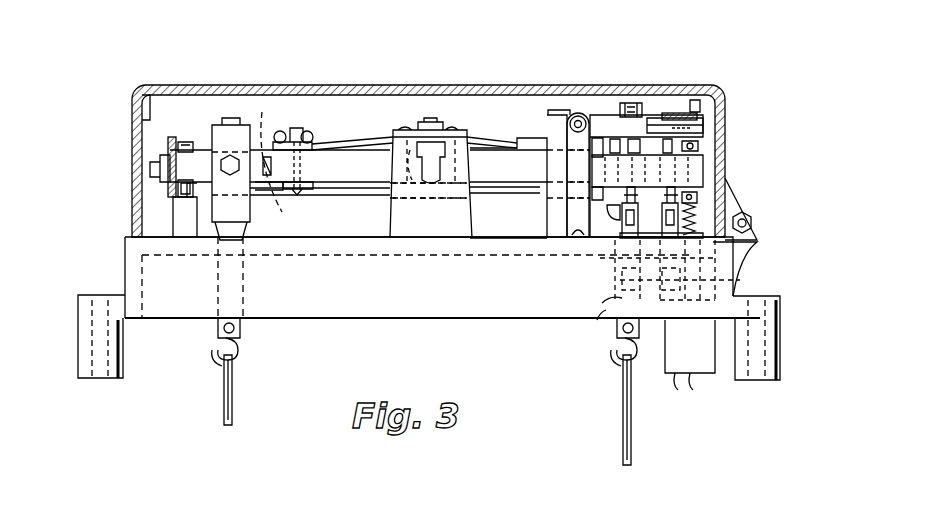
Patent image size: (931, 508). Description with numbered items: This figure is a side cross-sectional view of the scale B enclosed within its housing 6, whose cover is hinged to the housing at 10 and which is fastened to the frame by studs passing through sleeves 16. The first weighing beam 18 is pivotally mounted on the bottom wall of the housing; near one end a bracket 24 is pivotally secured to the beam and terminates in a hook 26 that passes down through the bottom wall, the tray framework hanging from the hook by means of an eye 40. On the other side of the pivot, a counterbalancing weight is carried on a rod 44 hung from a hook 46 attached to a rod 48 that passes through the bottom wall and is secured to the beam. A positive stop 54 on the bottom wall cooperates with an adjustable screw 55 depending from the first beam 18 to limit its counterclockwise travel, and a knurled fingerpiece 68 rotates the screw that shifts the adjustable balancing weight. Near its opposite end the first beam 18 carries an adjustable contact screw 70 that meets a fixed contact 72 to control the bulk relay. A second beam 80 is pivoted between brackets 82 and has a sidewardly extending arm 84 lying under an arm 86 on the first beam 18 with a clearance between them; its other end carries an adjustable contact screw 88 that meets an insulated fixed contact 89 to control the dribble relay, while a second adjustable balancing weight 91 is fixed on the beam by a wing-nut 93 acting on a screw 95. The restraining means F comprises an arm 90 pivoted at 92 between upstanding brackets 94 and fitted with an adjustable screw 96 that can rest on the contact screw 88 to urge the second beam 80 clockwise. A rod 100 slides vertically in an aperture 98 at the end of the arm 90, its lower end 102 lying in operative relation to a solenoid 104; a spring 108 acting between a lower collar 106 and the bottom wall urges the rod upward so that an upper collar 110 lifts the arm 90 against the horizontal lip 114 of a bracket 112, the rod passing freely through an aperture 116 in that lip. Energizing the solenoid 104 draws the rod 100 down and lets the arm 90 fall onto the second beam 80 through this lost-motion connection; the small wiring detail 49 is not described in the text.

The scale B is at (150, 88).
The restraining means F is at (650, 96).
The housing 6 is at (137, 263).
The hinge 10 is at (755, 223).
The sleeves 16 is at (80, 360).
The first weighing beam 18 is at (200, 158).
The bracket 24 is at (240, 125).
The hook 26 is at (247, 360).
The eye 40 is at (233, 395).
The rod 44 is at (632, 437).
The hook 46 is at (617, 358).
The rod 48 is at (600, 312).
The wiring 49 is at (630, 302).
The positive stop 54 is at (178, 215).
The adjustable screw 55 is at (186, 142).
The knurled fingerpiece 68 is at (172, 150).
The adjustable contact screw 70 is at (672, 197).
The fixed contact 72 is at (661, 229).
The second beam 80 is at (495, 168).
The brackets 82 is at (460, 212).
The sidewardly extending arm 84 is at (272, 191).
The sidewardly extending arm 86 is at (267, 155).
The adjustable contact screw 88 is at (632, 197).
The fixed contact 89 is at (630, 205).
The arm 90 is at (600, 118).
The second adjustable balancing weight 91 is at (318, 142).
The pivot 92 is at (578, 114).
The wing-nut 93 is at (304, 128).
The upstanding brackets 94 is at (575, 223).
The screw 95 is at (298, 193).
The adjustable screw 96 is at (614, 101).
The aperture 98 is at (702, 121).
The rod 100 is at (700, 147).
The lower end 102 is at (690, 278).
The solenoid 104 is at (703, 362).
The lower collar 106 is at (700, 204).
The spring 108 is at (720, 242).
The upper collar 110 is at (710, 128).
The bracket 112 is at (705, 168).
The horizontal lip 114 is at (670, 113).
The aperture 116 is at (694, 101).